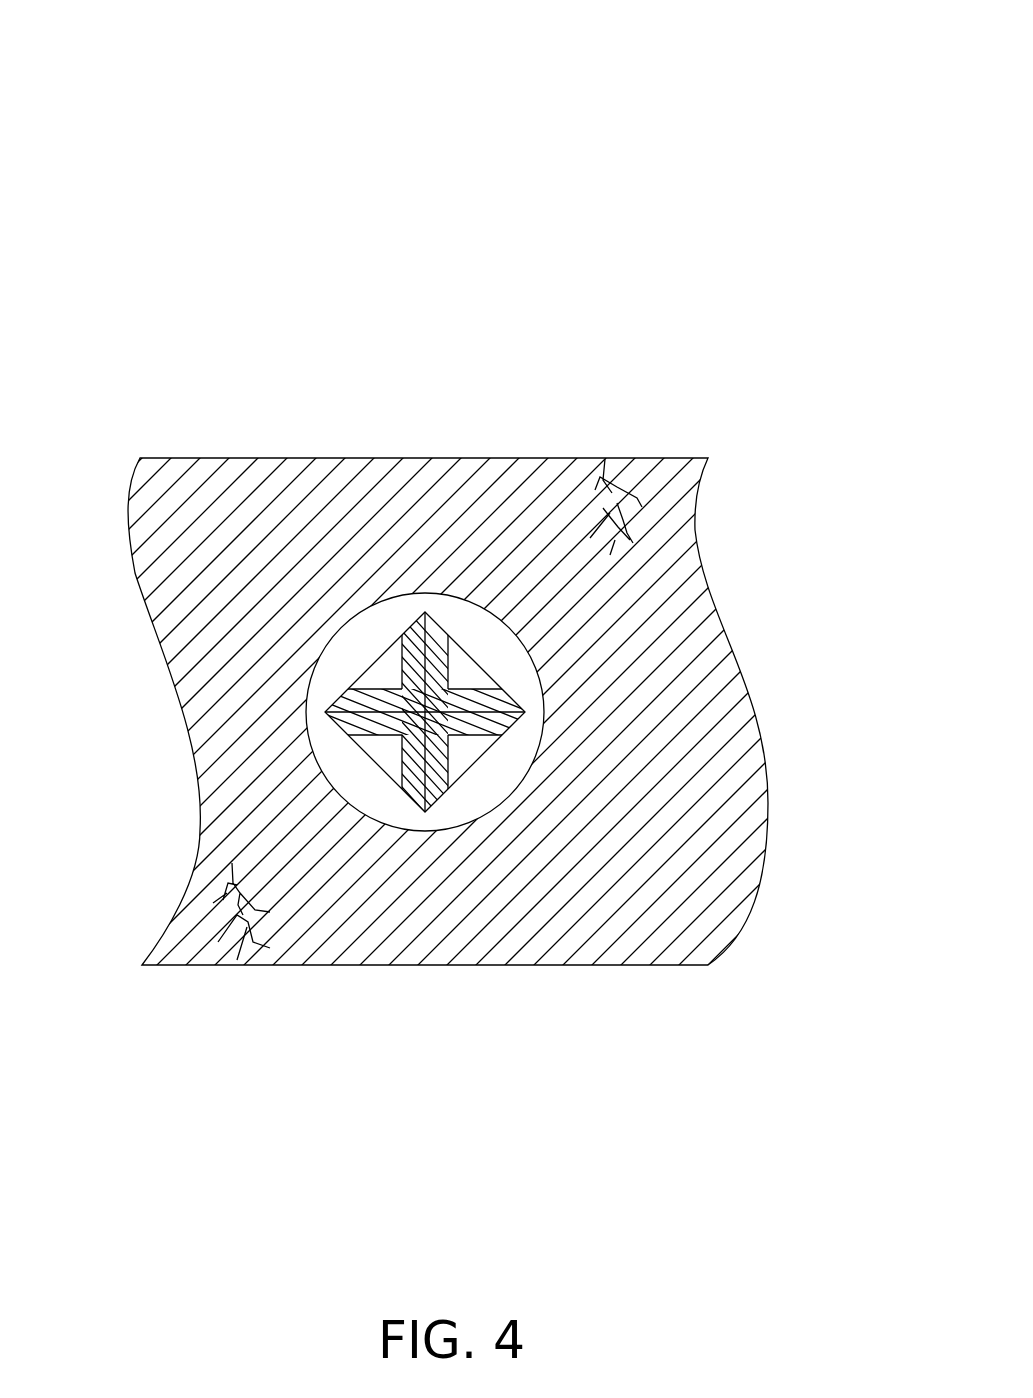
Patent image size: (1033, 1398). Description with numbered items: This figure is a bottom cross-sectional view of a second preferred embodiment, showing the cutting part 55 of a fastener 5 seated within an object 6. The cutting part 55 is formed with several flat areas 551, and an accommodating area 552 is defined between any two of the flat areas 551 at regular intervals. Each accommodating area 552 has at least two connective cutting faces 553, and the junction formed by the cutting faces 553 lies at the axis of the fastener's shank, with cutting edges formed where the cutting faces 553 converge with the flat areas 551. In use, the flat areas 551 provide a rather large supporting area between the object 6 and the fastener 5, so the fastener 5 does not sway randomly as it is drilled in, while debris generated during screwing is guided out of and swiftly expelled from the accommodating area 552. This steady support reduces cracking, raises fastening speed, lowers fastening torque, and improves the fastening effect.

The fastener 5 is at (146, 139).
The object 6 is at (330, 457).
The cutting part 55 is at (467, 786).
The flat areas 551 is at (447, 735).
The accommodating area 552 is at (472, 755).
The cutting faces 553 is at (402, 763).